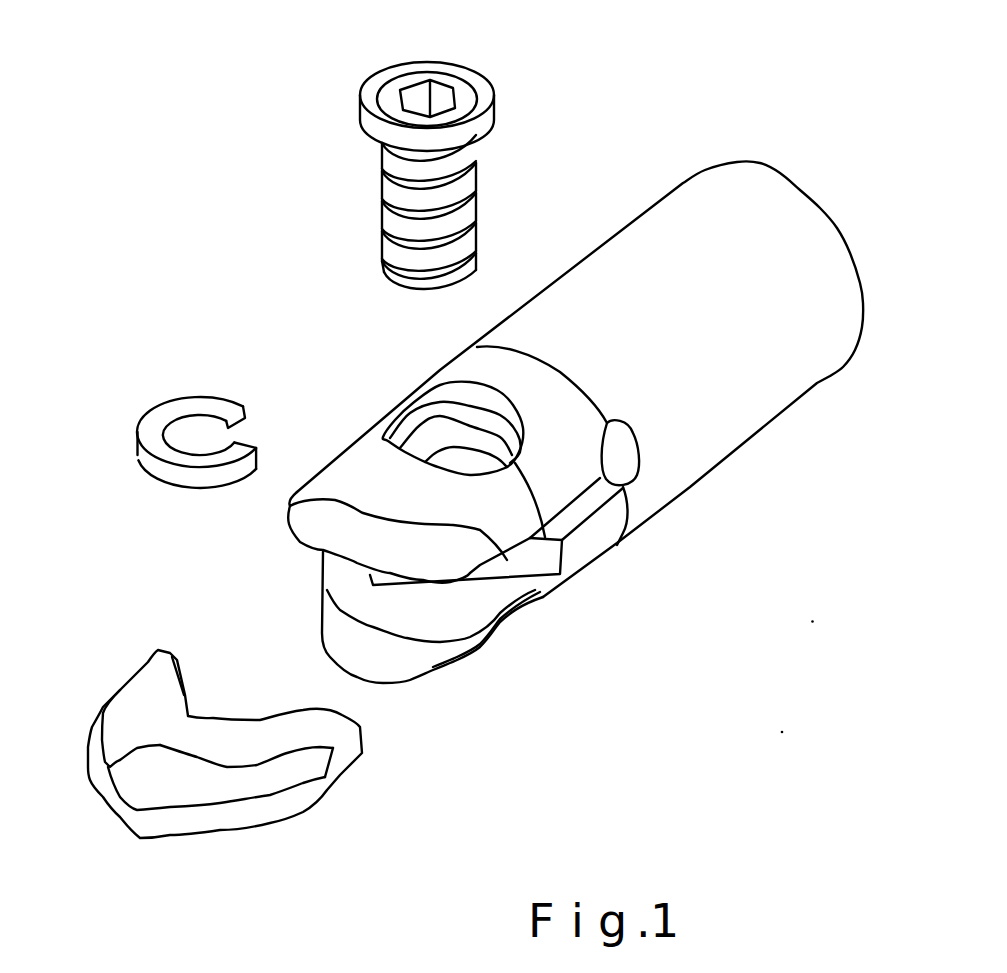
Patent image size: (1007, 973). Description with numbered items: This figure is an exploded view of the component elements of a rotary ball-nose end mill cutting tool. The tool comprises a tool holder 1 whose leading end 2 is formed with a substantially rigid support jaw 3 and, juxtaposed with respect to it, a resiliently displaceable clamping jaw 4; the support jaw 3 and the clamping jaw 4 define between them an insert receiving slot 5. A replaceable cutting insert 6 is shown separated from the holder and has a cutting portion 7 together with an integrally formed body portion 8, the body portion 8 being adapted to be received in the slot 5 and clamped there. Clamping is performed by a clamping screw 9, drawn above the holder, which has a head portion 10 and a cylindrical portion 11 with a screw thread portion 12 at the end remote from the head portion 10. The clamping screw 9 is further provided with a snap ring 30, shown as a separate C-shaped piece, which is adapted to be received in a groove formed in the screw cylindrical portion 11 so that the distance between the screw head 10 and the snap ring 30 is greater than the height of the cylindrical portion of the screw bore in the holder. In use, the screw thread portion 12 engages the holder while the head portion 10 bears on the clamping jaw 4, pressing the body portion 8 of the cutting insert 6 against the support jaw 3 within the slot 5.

The tool holder 1 is at (790, 368).
The leading end 2 is at (405, 693).
The support jaw 3 is at (415, 658).
The clamping jaw 4 is at (313, 525).
The insert receiving slot 5 is at (347, 590).
The cutting insert 6 is at (187, 785).
The cutting portion 7 is at (102, 792).
The body portion 8 is at (262, 735).
The clamping screw 9 is at (338, 218).
The head portion 10 is at (478, 92).
The cylindrical portion 11 is at (460, 165).
The screw thread portion 12 is at (477, 225).
The snap ring 30 is at (182, 410).